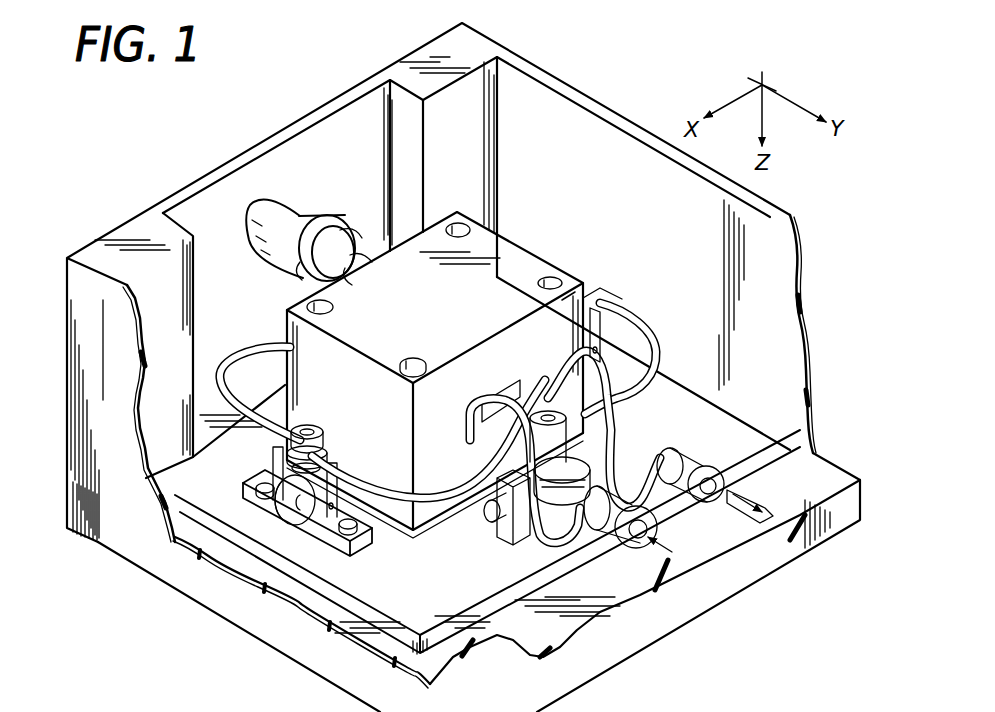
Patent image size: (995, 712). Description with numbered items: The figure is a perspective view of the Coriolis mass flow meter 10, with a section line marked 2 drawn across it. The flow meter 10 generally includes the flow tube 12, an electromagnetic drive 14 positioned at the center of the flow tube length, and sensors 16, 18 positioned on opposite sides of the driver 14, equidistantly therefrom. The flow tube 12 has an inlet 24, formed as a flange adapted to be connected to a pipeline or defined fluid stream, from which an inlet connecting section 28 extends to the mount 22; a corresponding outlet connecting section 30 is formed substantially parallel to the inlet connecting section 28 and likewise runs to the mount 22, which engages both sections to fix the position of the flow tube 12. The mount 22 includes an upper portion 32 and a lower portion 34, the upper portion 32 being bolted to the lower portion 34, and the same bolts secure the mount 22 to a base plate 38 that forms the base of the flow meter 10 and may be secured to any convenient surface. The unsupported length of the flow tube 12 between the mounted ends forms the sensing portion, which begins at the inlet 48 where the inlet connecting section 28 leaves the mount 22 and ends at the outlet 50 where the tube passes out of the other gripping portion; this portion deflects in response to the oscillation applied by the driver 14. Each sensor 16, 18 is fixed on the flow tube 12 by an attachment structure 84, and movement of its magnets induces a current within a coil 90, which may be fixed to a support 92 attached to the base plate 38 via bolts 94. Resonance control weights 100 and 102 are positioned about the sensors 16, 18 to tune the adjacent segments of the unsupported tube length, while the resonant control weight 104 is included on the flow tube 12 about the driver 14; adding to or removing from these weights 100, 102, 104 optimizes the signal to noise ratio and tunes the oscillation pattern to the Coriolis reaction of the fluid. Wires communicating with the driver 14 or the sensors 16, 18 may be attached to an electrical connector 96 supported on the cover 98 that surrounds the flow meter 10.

The Coriolis mass flow meter 10 is at (626, 72).
The flow tube 12 is at (240, 358).
The electromagnetic drive 14 is at (616, 414).
The sensor 16 is at (247, 457).
The sensor 18 is at (560, 258).
The mount 22 is at (397, 309).
The inlet 24 is at (693, 447).
The inlet connecting section 28 is at (540, 536).
The outlet connecting section 30 is at (642, 450).
The upper portion 32 is at (490, 354).
The lower portion 34 is at (445, 508).
The base plate 38 is at (437, 606).
The inlet to the sensing portion 48 is at (463, 434).
The outlet of the sensing portion 50 is at (557, 370).
The attachment structure 84 is at (265, 462).
The coil 90 is at (325, 483).
The support 92 is at (368, 543).
The bolts 94 is at (347, 520).
The electrical connector 96 is at (305, 195).
The cover 98 is at (597, 168).
The resonance control weight 100 is at (330, 322).
The resonance control weight 102 is at (590, 282).
The resonant control weight 104 is at (428, 439).
The section line 2 is at (634, 265).